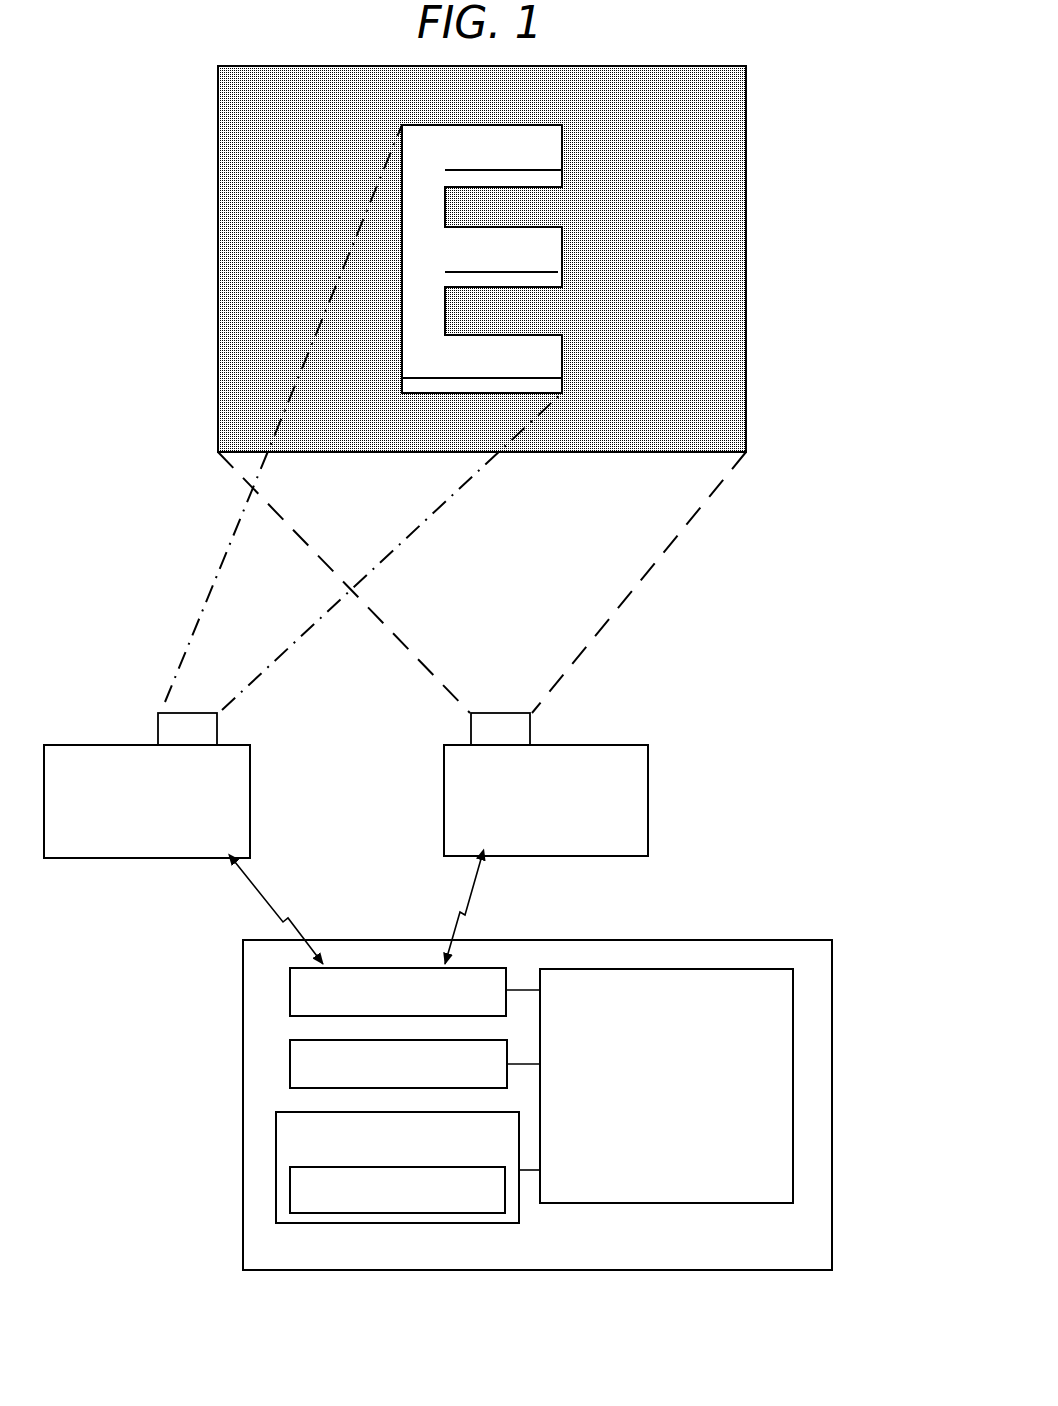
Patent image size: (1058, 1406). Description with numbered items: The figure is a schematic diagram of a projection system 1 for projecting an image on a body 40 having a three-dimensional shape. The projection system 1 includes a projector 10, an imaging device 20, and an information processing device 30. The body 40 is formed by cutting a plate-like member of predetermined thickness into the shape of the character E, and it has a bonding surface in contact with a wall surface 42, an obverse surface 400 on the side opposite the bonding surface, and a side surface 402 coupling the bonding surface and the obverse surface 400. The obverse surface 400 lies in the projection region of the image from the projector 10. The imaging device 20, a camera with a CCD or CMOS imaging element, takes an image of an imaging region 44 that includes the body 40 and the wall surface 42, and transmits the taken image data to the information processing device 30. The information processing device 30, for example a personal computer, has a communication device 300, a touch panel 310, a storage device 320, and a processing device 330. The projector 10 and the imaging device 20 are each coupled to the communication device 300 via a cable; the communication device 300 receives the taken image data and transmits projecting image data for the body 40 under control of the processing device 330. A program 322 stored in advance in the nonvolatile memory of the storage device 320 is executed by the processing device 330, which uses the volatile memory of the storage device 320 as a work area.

The projection system 1 is at (690, 669).
The projector 10 is at (250, 805).
The imaging device 20 is at (648, 805).
The information processing device 30 is at (832, 1240).
The communication device 300 is at (290, 992).
The touch panel 310 is at (290, 1064).
The storage device 320 is at (276, 1137).
The program 322 is at (290, 1193).
The processing device 330 is at (793, 987).
The body 40 is at (614, 227).
The obverse surface 400 is at (552, 152).
The side surface 402 is at (552, 181).
The wall surface 42 is at (605, 235).
The imaging region 44 is at (746, 282).